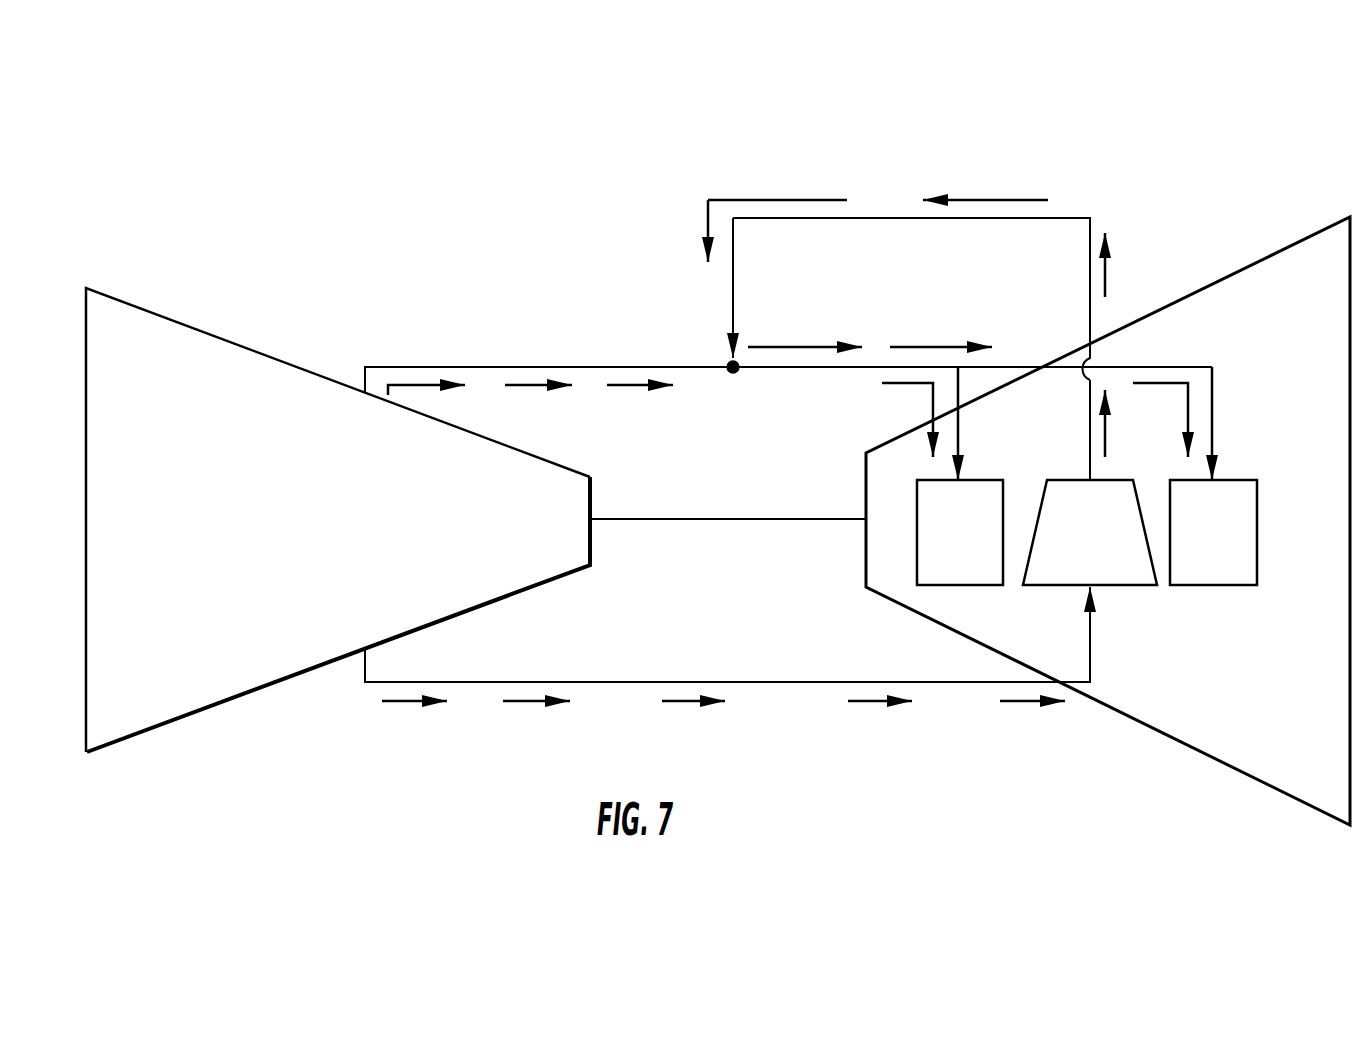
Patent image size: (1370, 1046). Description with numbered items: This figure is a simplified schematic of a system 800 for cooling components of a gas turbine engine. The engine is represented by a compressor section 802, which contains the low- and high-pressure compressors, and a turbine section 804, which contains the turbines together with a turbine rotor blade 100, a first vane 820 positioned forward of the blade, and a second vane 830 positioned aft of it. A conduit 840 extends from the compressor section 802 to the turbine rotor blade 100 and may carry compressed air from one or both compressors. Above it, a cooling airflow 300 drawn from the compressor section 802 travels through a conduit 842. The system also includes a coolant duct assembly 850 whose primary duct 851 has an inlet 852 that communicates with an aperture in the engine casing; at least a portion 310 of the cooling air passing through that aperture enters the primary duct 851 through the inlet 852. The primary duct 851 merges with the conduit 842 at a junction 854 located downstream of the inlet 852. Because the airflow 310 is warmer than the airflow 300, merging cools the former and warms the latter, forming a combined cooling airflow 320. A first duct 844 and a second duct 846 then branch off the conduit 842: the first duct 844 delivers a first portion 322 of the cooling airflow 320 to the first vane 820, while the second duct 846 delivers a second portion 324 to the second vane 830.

The turbine rotor blade 100 is at (1071, 547).
The cooling airflow 300 is at (633, 385).
The portion of the cooling airflow 310 is at (1002, 200).
The cooling airflow 320 is at (810, 347).
The first portion of the cooling airflow 322 is at (933, 413).
The second portion of the cooling airflow 324 is at (1163, 383).
The system 800 is at (841, 774).
The compressor section 802 is at (282, 531).
The turbine section 804 is at (1262, 751).
The first vane 820 is at (941, 547).
The second vane 830 is at (1194, 547).
The conduit 840 is at (790, 683).
The conduit 842 is at (382, 367).
The first duct 844 is at (958, 420).
The second duct 846 is at (1212, 432).
The coolant duct assembly 850 is at (1064, 142).
The primary duct 851 is at (1068, 218).
The inlet 852 is at (1090, 463).
The junction 854 is at (730, 363).